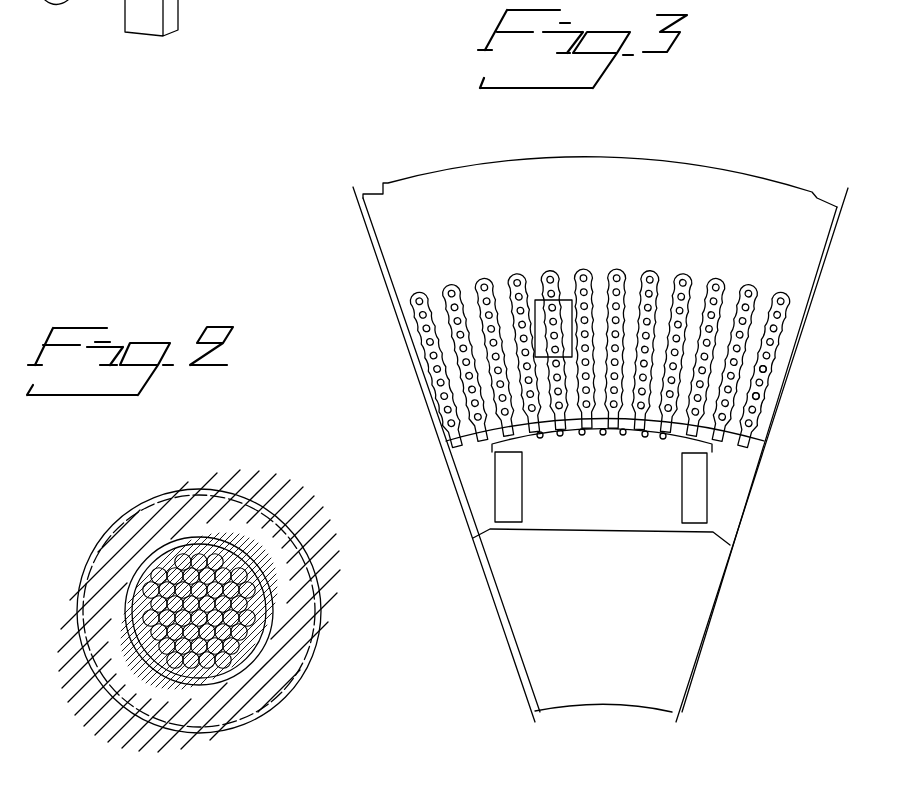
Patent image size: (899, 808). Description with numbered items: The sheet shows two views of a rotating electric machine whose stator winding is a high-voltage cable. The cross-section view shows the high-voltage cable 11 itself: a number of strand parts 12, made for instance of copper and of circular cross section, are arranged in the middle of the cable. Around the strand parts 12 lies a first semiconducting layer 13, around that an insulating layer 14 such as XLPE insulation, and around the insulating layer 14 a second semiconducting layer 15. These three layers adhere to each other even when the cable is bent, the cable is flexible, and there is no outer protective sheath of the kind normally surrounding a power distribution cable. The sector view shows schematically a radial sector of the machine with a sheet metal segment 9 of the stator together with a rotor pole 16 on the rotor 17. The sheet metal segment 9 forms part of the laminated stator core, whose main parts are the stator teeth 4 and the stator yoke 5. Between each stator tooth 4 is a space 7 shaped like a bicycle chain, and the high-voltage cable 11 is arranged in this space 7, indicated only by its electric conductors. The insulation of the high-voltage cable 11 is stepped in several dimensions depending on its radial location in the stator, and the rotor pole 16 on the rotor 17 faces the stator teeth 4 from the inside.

In FIG. 3, the stator tooth 4 is at (455, 382).
In FIG. 3, the stator yoke 5 is at (682, 177).
In FIG. 3, the space 7 is at (759, 398).
In FIG. 3, the sheet metal segment 9 is at (366, 247).
In FIG. 3, the high-voltage cable 11 is at (766, 371).
In FIG. 2, the high-voltage cable 11 is at (118, 513).
In FIG. 2, the strand parts 12 is at (138, 577).
In FIG. 2, the first semiconducting layer 13 is at (268, 598).
In FIG. 2, the insulating layer 14 is at (268, 558).
In FIG. 2, the second semiconducting layer 15 is at (272, 532).
In FIG. 3, the rotor pole 16 is at (660, 492).
In FIG. 3, the rotor 17 is at (688, 572).